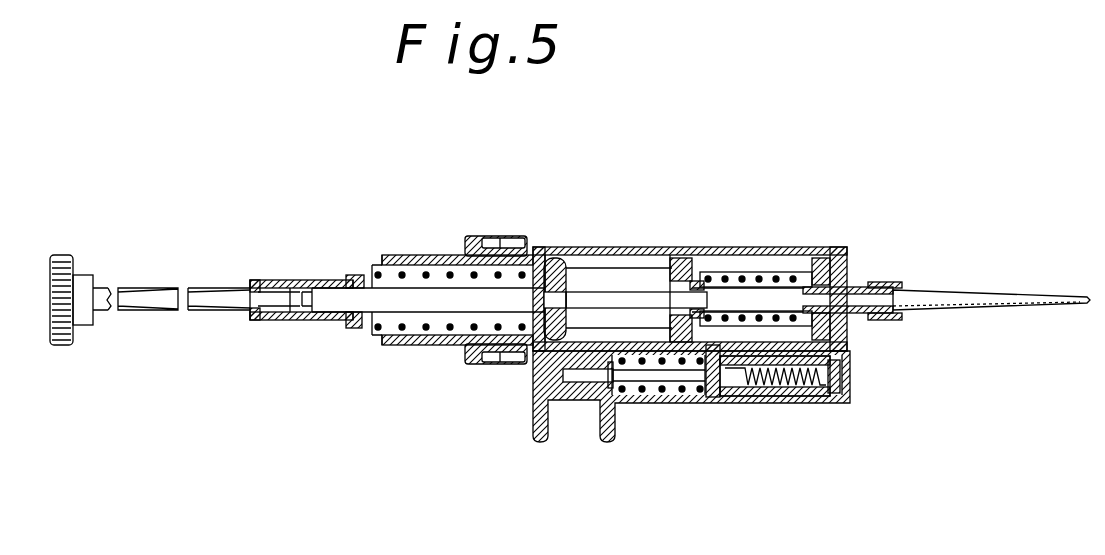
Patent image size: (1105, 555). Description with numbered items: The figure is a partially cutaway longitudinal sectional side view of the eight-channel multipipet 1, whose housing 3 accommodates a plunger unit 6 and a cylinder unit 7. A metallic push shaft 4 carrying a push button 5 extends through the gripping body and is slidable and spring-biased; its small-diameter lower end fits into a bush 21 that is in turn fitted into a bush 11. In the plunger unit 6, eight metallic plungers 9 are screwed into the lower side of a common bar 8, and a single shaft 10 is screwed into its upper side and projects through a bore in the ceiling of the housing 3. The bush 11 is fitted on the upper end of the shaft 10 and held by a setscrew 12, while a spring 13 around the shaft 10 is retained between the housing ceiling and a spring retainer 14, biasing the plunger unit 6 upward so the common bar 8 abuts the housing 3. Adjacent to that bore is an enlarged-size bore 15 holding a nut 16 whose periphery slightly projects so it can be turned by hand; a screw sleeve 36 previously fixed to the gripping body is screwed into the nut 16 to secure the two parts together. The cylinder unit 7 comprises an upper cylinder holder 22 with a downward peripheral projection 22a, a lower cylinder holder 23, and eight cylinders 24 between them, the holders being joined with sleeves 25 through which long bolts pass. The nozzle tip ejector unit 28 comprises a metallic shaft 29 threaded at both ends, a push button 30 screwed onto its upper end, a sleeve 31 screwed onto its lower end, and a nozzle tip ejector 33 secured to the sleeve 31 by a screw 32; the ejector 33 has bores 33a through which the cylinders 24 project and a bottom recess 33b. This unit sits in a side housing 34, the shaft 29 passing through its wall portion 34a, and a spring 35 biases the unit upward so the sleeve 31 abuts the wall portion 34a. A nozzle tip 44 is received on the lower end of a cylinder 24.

The 8-channel multipipet 1 is at (390, 192).
The housing 3 is at (668, 236).
The push shaft 4 is at (146, 297).
The push button 5 is at (86, 287).
The plunger unit 6 is at (655, 182).
The cylinder unit 7 is at (737, 155).
The common bar 8 is at (553, 250).
The plungers 9 is at (625, 250).
The shaft 10 is at (424, 252).
The bush 11 is at (323, 282).
The setscrew 12 is at (346, 276).
The spring 13 is at (418, 346).
The spring retainer 14 is at (356, 328).
The enlarged-size bore 15 is at (488, 238).
The nut 16 is at (506, 238).
The bush 21 is at (285, 282).
The upper cylinder holder 22 is at (683, 248).
The peripheral projection 22a is at (696, 250).
The lower cylinder holder 23 is at (823, 250).
The cylinders 24 is at (782, 250).
The sleeves 25 is at (752, 250).
The nozzle tip ejector unit 28 is at (882, 418).
The shaft 29 is at (680, 406).
The push button 30 is at (560, 437).
The sleeve 31 is at (745, 406).
The screw 32 is at (842, 377).
The nozzle tip ejector 33 is at (822, 406).
The bores 33a is at (862, 284).
The recess 33b is at (856, 320).
The side housing 34 is at (633, 405).
The wall portion 34a is at (711, 405).
The spring 35 is at (652, 405).
The screw sleeve 36 is at (452, 349).
The nozzle tips 44 is at (945, 288).